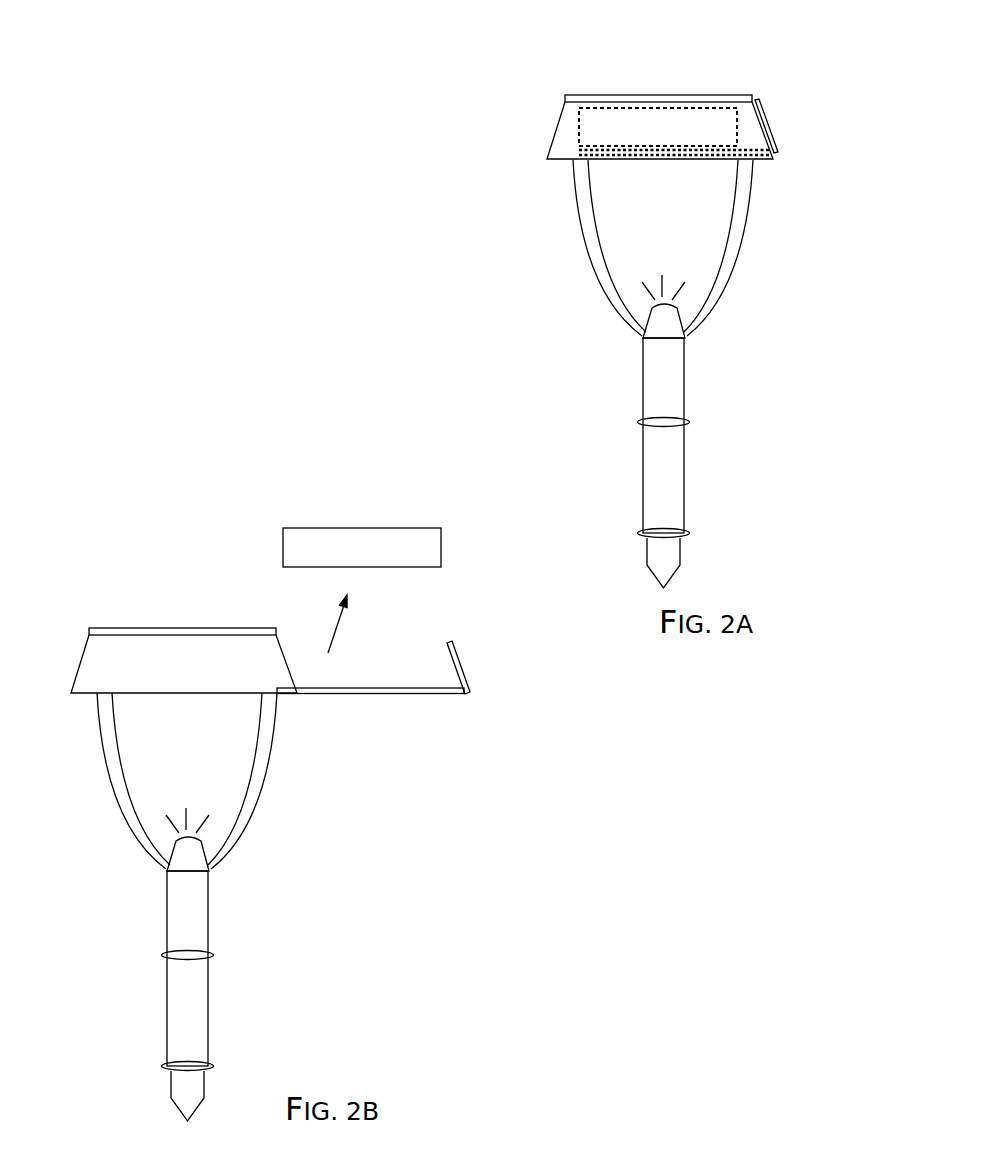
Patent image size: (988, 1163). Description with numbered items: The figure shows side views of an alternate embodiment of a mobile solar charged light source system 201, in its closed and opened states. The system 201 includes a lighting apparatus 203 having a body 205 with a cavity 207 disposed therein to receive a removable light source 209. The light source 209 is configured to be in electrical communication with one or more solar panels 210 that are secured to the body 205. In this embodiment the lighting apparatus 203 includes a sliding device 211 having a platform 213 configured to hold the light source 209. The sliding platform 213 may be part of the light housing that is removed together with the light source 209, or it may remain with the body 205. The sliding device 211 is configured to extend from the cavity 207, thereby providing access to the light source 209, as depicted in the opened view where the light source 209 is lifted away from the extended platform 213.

In FIG. 2A, the mobile solar charged light source system 201 is at (470, 36).
In FIG. 2B, the mobile solar charged light source system 201 is at (136, 518).
In FIG. 2A, the lighting apparatus 203 is at (590, 373).
In FIG. 2B, the lighting apparatus 203 is at (265, 908).
In FIG. 2A, the body 205 is at (590, 243).
In FIG. 2B, the body 205 is at (252, 805).
In FIG. 2A, the cavity 207 is at (752, 118).
In FIG. 2B, the cavity 207 is at (118, 655).
In FIG. 2A, the removable light source 209 is at (579, 128).
In FIG. 2B, the removable light source 209 is at (340, 528).
In FIG. 2B, the solar panels 210 is at (236, 628).
In FIG. 2A, the sliding device 211 is at (770, 130).
In FIG. 2B, the sliding device 211 is at (457, 652).
In FIG. 2A, the platform 213 is at (577, 155).
In FIG. 2B, the platform 213 is at (362, 695).